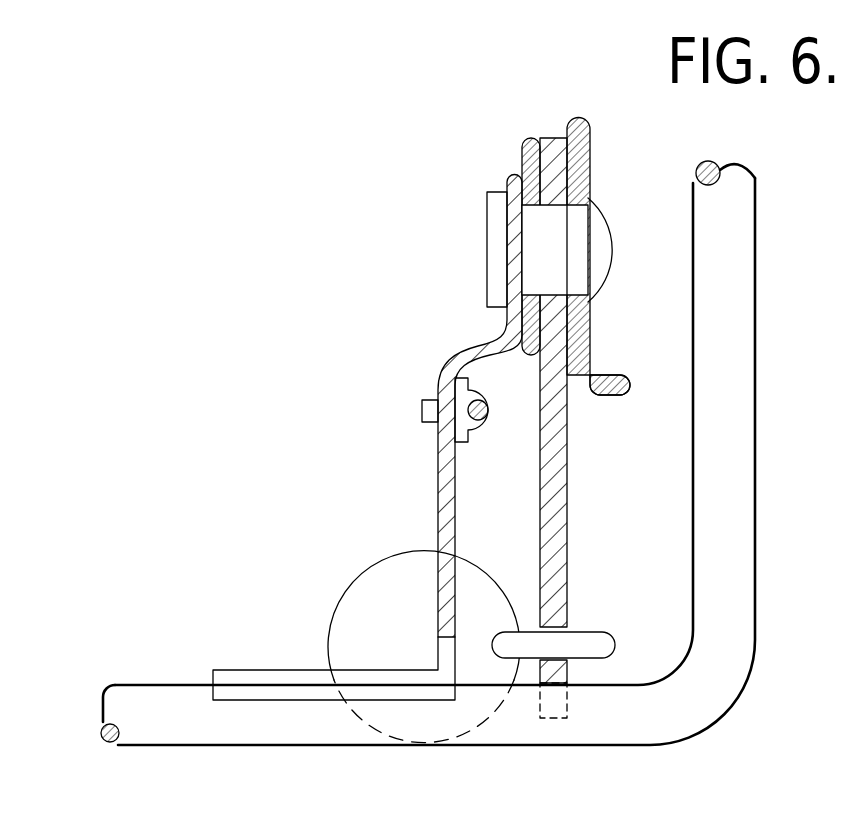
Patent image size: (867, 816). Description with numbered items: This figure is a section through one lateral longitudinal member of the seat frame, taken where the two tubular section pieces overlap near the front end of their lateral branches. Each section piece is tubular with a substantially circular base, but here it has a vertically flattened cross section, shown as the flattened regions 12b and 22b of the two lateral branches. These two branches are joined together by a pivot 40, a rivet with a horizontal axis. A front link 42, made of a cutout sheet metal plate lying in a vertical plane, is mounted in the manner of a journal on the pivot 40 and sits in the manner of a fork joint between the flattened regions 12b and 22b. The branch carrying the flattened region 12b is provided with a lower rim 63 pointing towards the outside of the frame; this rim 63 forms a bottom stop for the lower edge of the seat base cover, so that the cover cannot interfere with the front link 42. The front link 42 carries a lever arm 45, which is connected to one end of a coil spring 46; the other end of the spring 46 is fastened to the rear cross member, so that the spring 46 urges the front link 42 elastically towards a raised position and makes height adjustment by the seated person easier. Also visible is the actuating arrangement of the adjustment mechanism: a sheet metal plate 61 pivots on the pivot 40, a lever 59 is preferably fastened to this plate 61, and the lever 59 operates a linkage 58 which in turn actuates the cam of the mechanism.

The front link 42 is at (547, 128).
The vertically flattened cross section region 22b is at (522, 149).
The vertically flattened cross section region 12b is at (590, 148).
The pivot 40 is at (545, 245).
The lower rim 63 is at (622, 396).
The lever 59 is at (732, 420).
The linkage 58 is at (482, 428).
The sheet metal plate 61 is at (447, 498).
The lever arm 45 is at (552, 537).
The coil spring 46 is at (540, 643).